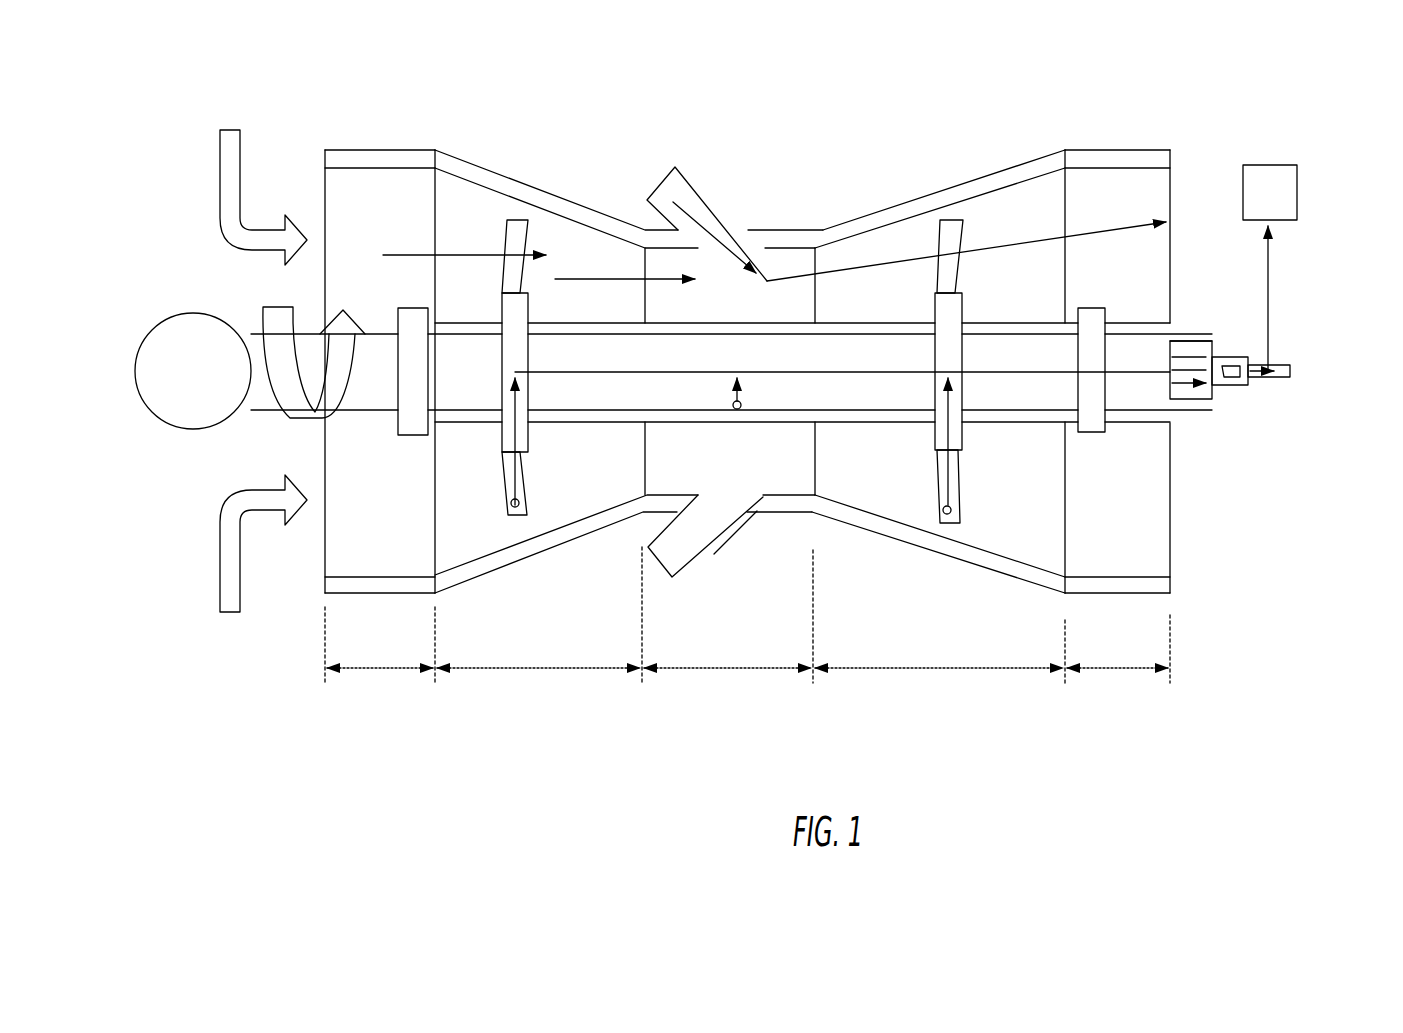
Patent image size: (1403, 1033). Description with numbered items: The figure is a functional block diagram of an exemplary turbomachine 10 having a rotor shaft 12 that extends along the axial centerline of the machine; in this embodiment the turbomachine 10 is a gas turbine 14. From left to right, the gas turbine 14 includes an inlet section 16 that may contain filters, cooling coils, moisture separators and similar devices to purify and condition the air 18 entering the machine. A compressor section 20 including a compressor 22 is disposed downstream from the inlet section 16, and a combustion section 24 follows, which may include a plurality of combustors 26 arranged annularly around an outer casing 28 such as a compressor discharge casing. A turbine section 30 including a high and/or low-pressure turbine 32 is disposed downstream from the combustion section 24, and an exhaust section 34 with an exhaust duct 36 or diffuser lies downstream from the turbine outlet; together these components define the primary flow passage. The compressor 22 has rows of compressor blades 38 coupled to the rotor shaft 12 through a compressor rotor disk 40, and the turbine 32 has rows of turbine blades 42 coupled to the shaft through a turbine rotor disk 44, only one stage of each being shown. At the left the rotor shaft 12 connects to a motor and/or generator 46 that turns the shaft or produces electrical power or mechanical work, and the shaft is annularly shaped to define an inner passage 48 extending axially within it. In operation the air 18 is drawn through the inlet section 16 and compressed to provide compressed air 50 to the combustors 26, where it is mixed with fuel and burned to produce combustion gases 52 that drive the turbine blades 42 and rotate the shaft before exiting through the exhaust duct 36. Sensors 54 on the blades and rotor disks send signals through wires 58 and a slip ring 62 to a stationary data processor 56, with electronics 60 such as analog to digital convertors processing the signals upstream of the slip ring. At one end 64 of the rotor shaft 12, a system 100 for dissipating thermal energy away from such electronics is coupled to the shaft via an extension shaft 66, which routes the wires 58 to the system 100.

The turbomachine 10 is at (1081, 84).
The rotor shaft 12 is at (887, 411).
The gas turbine 14 is at (706, 778).
The inlet section 16 is at (370, 670).
The air 18 is at (228, 163).
The compressor section 20 is at (522, 670).
The compressor 22 is at (544, 558).
The combustion section 24 is at (725, 670).
The combustor 26 is at (714, 562).
The outer casing 28 is at (792, 506).
The turbine section 30 is at (920, 670).
The turbine 32 is at (912, 548).
The exhaust section 34 is at (1092, 670).
The exhaust duct 36 is at (1132, 602).
The compressor blades 38 is at (526, 480).
The compressor rotor disk 40 is at (522, 308).
The turbine blades 42 is at (960, 478).
The turbine rotor disk 44 is at (962, 310).
The motor and/or generator 46 is at (250, 368).
The inner passage 48 is at (838, 348).
The compressed air 50 is at (660, 284).
The combustion gases 52 is at (730, 243).
The sensors 54 is at (520, 503).
The stationary data processor 56 is at (1270, 192).
The wires 58 is at (517, 405).
The electronics 60 is at (1230, 386).
The slip ring 62 is at (1292, 368).
The end of the rotor shaft 64 is at (1172, 402).
The extension shaft 66 is at (1192, 340).
The system for dissipating thermal energy 100 is at (1232, 344).